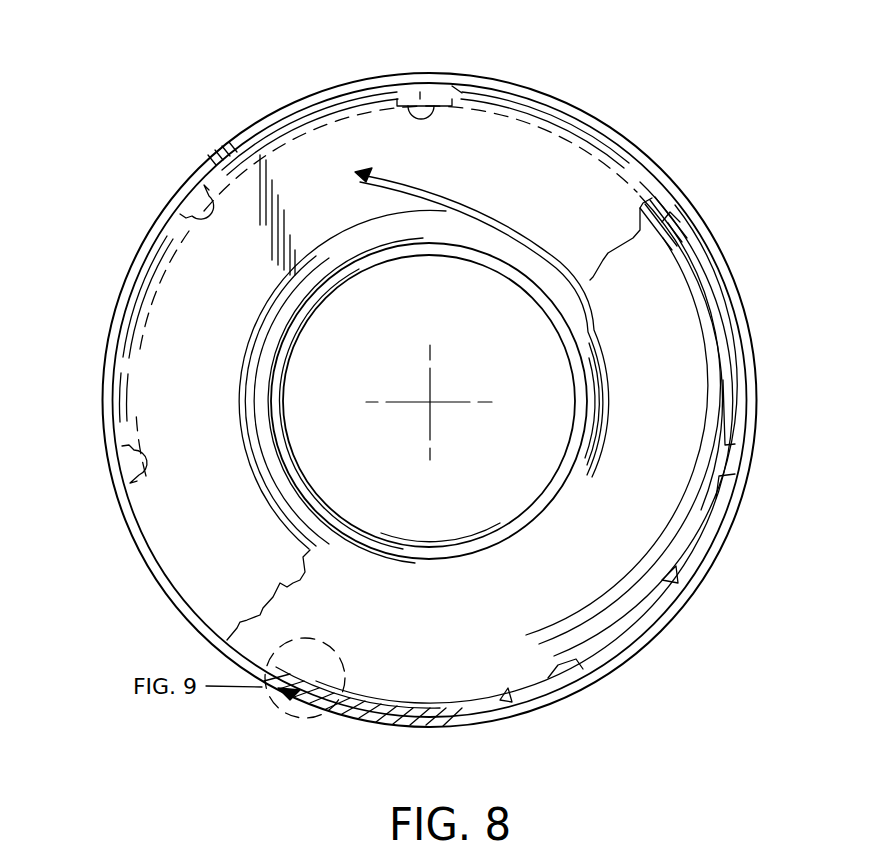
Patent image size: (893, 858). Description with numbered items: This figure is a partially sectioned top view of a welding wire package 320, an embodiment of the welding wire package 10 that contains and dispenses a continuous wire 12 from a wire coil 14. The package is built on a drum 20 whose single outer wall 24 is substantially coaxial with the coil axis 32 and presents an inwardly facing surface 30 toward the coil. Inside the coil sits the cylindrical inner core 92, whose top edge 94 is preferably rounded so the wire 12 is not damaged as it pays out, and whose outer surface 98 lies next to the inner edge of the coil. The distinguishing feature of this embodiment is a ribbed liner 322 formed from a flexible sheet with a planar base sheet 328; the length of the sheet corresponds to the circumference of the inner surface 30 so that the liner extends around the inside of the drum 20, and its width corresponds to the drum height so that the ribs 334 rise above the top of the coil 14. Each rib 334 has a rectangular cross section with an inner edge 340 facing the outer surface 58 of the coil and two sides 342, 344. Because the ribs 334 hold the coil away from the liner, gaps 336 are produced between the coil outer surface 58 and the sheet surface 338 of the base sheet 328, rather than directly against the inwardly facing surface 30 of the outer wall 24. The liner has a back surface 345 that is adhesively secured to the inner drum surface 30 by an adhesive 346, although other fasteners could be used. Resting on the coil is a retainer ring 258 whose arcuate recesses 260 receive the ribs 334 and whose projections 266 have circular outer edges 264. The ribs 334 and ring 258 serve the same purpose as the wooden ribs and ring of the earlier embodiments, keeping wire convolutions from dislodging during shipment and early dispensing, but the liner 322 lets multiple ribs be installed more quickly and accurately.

The welding wire package 10 is at (760, 323).
The continuous wire 12 is at (403, 184).
The wire coil 14 is at (668, 268).
The drum 20 is at (665, 155).
The outer wall 24 is at (757, 423).
The inwardly facing surface 30 is at (505, 698).
The coil axis 32 is at (432, 402).
The outer surface of the wire coil 58 is at (672, 568).
The inner core 92 is at (394, 556).
The top edge 94 is at (330, 516).
The outer surface 98 is at (444, 560).
The retainer ring 258 is at (308, 150).
The arcuate recess 260 is at (436, 118).
The circular outer edge 264 is at (552, 124).
The projection 266 is at (333, 122).
The welding wire package 320 is at (652, 133).
The ribbed liner 322 is at (452, 88).
The planar base sheet 328 is at (664, 611).
The rib 334 is at (420, 94).
The gap 336 is at (696, 258).
The sheet surface 338 is at (702, 541).
The inner edge 340 is at (150, 461).
The side 342 is at (134, 445).
The side 344 is at (154, 497).
The back surface 345 is at (644, 634).
The adhesive 346 is at (112, 397).